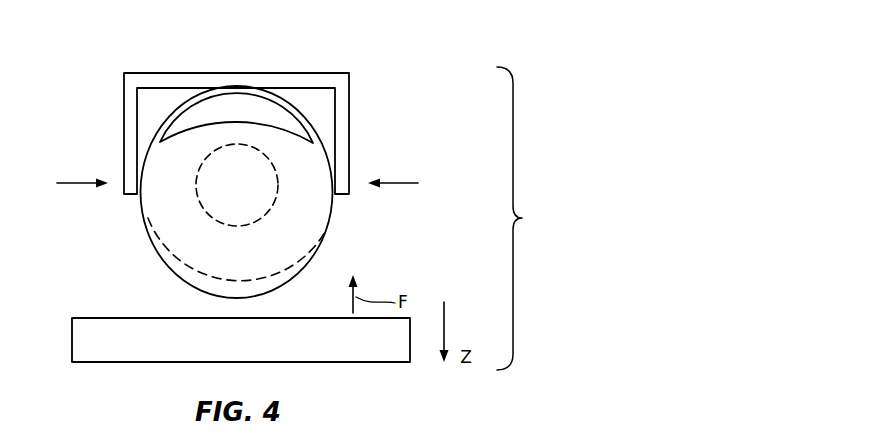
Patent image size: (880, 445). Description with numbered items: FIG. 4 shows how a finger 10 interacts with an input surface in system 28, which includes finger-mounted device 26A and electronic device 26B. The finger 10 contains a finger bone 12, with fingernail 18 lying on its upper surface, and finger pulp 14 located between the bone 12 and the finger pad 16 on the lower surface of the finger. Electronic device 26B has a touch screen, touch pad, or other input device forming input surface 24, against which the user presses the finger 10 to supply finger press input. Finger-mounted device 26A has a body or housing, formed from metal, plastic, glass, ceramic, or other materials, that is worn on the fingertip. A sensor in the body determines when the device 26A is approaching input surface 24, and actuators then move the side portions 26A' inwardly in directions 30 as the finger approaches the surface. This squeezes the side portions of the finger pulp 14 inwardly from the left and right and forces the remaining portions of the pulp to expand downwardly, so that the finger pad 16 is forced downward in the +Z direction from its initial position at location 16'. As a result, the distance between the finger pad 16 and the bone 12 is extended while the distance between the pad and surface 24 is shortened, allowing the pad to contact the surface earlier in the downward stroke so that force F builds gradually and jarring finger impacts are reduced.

The finger 10 is at (307, 120).
The finger bone 12 is at (195, 191).
The finger pulp 14 is at (253, 243).
The finger pad 16 is at (220, 300).
The initial position of finger pad 16' is at (236, 264).
The fingernail 18 is at (193, 102).
The input surface 24 is at (107, 317).
The finger-mounted device 26A is at (236, 105).
The side portions 26A' is at (236, 133).
The electronic device 26B is at (107, 363).
The system 28 is at (524, 218).
The directions 30 is at (71, 185).